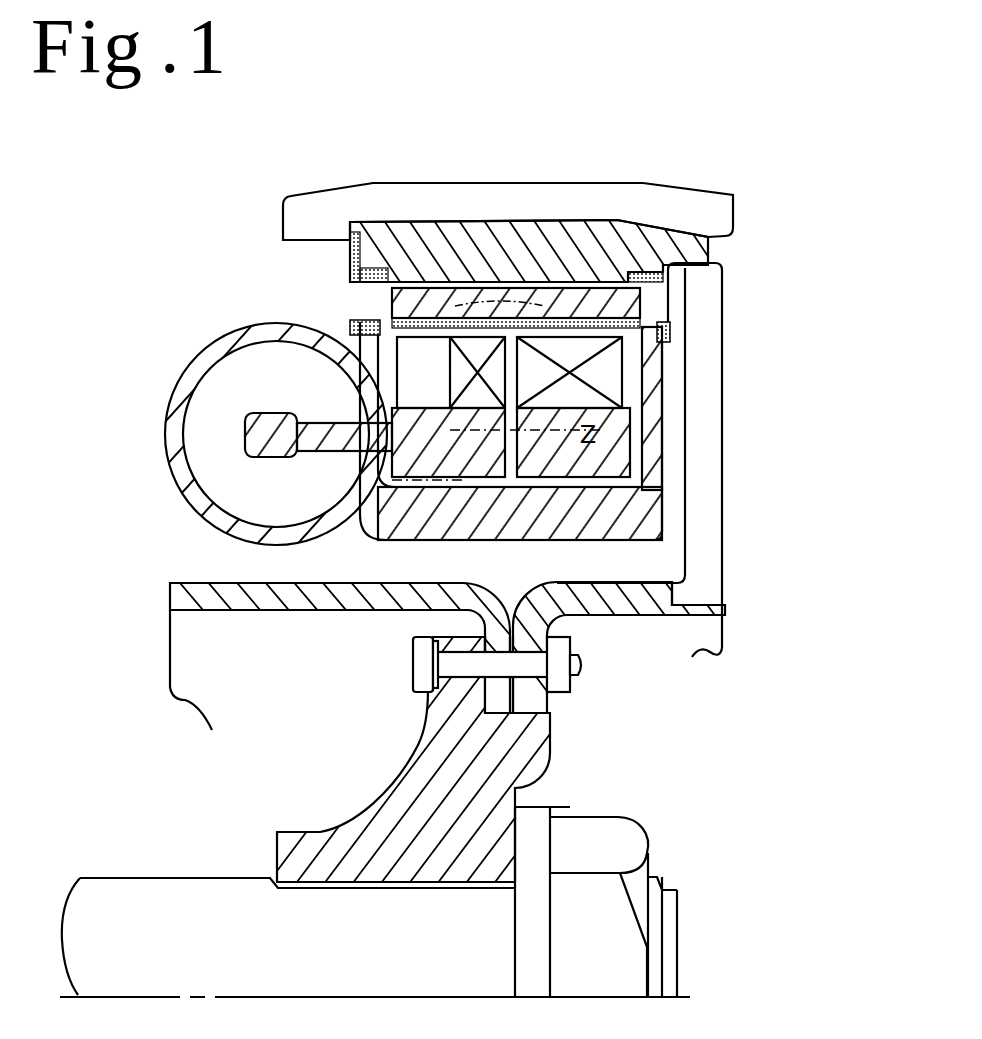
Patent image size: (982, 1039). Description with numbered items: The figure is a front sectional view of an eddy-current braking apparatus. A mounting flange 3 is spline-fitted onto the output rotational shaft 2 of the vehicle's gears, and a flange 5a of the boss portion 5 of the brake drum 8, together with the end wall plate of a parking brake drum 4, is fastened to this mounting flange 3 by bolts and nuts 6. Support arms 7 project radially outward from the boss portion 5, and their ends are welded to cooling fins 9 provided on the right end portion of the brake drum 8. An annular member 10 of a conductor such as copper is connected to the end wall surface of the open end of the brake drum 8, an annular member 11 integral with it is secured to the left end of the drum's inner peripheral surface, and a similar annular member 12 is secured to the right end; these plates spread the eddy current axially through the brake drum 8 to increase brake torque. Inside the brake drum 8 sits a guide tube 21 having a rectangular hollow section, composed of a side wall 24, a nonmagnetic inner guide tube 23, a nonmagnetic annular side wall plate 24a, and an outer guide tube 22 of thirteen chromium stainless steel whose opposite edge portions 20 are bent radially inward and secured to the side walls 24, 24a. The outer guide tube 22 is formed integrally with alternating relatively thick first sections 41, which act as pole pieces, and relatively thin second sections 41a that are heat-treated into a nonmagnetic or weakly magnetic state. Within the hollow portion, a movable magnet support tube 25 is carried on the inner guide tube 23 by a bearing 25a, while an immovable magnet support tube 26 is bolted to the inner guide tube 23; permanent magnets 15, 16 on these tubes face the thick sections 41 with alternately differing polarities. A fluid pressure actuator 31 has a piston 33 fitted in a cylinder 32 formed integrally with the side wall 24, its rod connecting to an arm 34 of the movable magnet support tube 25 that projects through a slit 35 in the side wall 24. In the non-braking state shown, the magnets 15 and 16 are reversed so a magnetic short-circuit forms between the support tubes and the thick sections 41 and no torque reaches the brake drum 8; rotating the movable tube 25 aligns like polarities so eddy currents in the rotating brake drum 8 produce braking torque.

The output rotational shaft 2 is at (205, 900).
The mounting flange 3 is at (430, 775).
The parking brake drum 4 is at (293, 600).
The boss portion 5 is at (655, 605).
The flange 5a is at (545, 705).
The bolts and nuts 6 is at (586, 666).
The support arms 7 is at (712, 515).
The brake drum 8 is at (527, 238).
The cooling fins 9 is at (705, 205).
The annular member 10 is at (350, 247).
The annular member 11 is at (362, 274).
The annular member 12 is at (660, 270).
The permanent magnets 15 is at (404, 392).
The permanent magnets 16 is at (605, 372).
The opposite edge portions 20 is at (350, 330).
The guide tube 21 is at (542, 538).
The outer guide tube 22 is at (648, 318).
The inner guide tube 23 is at (487, 520).
The side wall 24 is at (357, 386).
The annular side wall plate 24a is at (655, 440).
The movable magnet support tube 25 is at (408, 457).
The bearing 25a is at (410, 490).
The immovable magnet support tube 26 is at (543, 477).
The fluid pressure actuator 31 is at (235, 326).
The cylinder 32 is at (205, 497).
The piston 33 is at (222, 390).
The arm 34 is at (270, 428).
The slit 35 is at (330, 455).
The first sections 41 is at (462, 300).
The second sections 41a is at (590, 318).